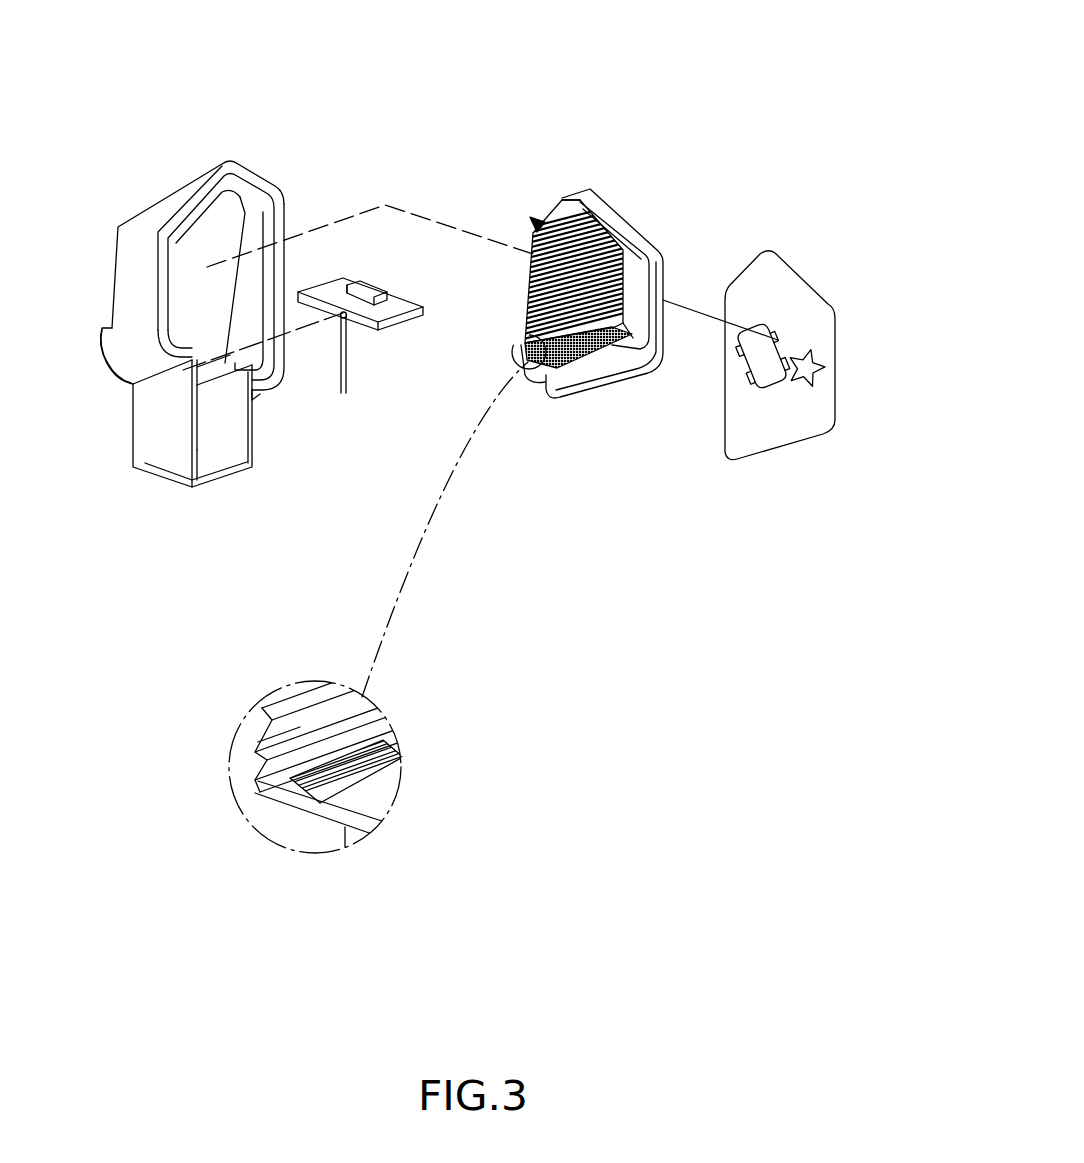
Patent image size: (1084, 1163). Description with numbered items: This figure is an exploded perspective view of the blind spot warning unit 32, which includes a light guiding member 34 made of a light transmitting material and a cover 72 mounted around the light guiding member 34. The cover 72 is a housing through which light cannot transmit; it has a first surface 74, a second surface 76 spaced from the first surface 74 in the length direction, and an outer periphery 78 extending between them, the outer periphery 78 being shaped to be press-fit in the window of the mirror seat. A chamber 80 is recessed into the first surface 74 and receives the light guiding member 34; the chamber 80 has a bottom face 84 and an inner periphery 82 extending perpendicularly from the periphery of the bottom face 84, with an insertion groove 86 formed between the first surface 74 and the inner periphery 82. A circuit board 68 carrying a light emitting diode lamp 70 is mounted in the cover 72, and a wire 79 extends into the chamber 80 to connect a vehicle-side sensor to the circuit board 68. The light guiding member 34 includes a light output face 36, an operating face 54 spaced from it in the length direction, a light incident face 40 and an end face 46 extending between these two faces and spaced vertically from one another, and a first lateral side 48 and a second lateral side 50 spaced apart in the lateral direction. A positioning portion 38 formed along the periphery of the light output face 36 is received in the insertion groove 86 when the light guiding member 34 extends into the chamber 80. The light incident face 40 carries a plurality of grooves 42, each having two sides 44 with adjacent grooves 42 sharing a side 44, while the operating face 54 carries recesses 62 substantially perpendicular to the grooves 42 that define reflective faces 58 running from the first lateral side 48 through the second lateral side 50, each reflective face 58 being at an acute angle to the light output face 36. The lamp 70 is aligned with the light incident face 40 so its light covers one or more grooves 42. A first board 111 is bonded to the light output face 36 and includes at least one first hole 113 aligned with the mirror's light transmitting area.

The blind spot warning unit 32 is at (396, 117).
The light guiding member 34 is at (653, 172).
The light output face 36 is at (662, 270).
The positioning portion 38 is at (637, 225).
The light incident face 40 is at (590, 360).
The grooves 42 is at (383, 813).
The sides 44 is at (400, 760).
The end face 46 is at (567, 197).
The first lateral side 48 is at (633, 312).
The second lateral side 50 is at (533, 280).
The operating face 54 is at (533, 222).
The reflective faces 58 is at (287, 693).
The recesses 62 is at (272, 720).
The circuit board 68 is at (390, 318).
The light emitting diode (LED) lamp 70 is at (373, 287).
The cover 72 is at (180, 193).
The first surface 74 is at (285, 255).
The second surface 76 is at (115, 280).
The outer periphery 78 is at (120, 353).
The wire 79 is at (347, 378).
The chamber 80 is at (273, 187).
The inner periphery 82 is at (283, 362).
The bottom face 84 is at (190, 255).
The insertion groove 86 is at (250, 207).
The first board 111 is at (837, 395).
The first hole 113 is at (777, 323).